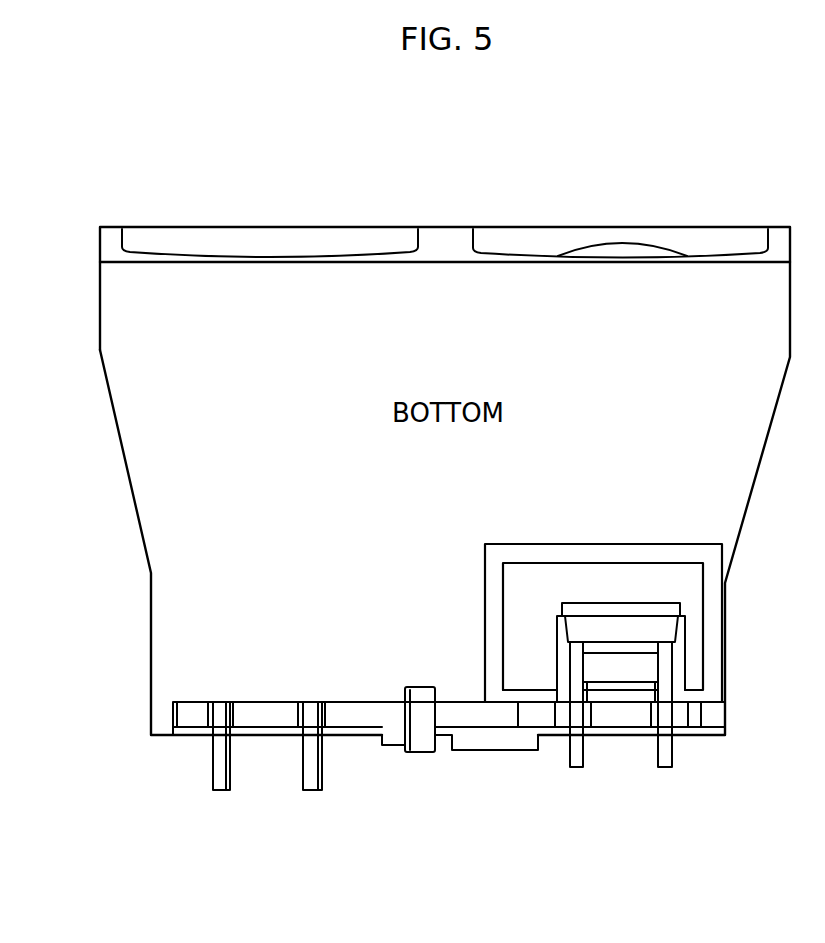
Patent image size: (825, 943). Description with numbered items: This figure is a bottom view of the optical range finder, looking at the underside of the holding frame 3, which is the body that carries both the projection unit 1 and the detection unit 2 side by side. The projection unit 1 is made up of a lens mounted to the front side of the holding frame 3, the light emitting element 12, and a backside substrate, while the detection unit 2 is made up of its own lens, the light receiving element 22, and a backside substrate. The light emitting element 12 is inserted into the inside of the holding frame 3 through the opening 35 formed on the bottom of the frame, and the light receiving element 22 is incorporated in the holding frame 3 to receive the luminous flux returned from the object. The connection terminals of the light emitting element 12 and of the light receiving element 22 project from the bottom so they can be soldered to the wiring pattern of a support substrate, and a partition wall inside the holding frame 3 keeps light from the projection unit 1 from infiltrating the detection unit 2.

The projection unit 1 is at (624, 206).
The detection unit 2 is at (270, 206).
The holding frame 3 is at (181, 640).
The light emitting element 12 is at (681, 628).
The light receiving element 22 is at (213, 765).
The opening 35 is at (684, 677).